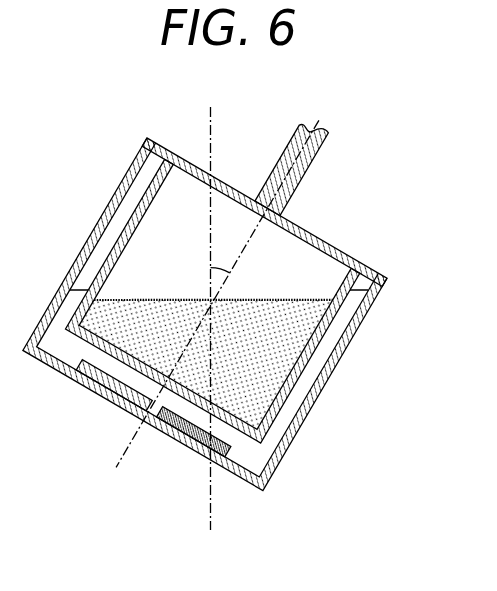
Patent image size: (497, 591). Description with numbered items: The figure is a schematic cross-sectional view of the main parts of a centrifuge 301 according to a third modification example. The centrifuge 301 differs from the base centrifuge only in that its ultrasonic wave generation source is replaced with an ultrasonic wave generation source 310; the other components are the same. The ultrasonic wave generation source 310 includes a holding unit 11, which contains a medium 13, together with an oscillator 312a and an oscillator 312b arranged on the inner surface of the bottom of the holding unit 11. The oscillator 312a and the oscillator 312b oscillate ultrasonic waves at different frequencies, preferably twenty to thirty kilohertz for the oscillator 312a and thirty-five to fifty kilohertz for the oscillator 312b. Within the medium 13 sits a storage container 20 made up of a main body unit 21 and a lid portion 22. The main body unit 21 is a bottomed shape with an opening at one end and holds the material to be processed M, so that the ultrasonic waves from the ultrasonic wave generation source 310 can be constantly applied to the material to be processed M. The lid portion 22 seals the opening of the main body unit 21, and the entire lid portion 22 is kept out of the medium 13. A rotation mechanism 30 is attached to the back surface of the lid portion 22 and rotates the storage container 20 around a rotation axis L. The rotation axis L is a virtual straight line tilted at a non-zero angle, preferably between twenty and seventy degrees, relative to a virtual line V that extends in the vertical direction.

The centrifuge 301 is at (383, 178).
The ultrasonic wave generation source 310 is at (362, 447).
The holding unit 11 is at (282, 470).
The medium 13 is at (286, 438).
The oscillator 312a is at (113, 394).
The oscillator 312b is at (217, 455).
The storage container 20 is at (434, 232).
The lid portion 22 is at (362, 262).
The main body unit 21 is at (376, 277).
The rotation mechanism 30 is at (268, 178).
The material to be processed M is at (160, 308).
The rotation axis L is at (314, 114).
The virtual line V is at (210, 118).